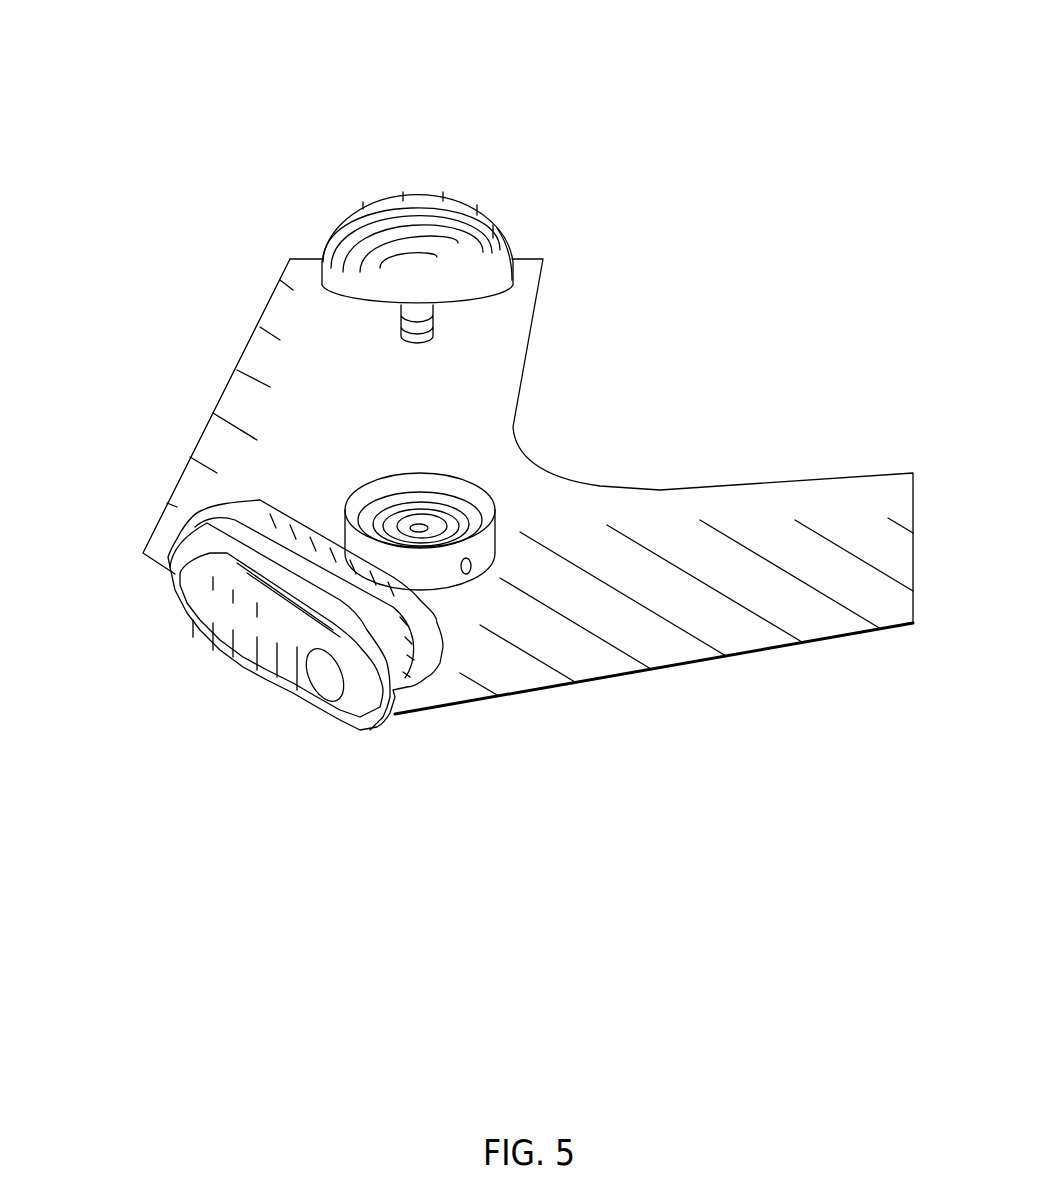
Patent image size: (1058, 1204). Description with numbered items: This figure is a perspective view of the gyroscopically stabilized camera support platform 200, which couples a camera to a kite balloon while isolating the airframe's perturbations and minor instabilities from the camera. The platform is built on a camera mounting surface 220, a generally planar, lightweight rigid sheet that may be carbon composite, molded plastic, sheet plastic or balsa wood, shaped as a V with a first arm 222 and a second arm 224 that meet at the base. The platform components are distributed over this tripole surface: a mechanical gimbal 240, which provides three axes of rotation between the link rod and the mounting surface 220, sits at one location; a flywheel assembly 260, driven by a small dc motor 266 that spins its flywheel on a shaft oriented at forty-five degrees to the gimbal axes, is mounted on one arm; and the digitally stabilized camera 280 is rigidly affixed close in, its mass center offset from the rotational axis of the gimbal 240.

The gyroscopically stabilized camera support platform 200 is at (738, 119).
The camera mounting surface 220 is at (770, 650).
The first arm 222 is at (574, 303).
The second arm 224 is at (836, 420).
The mechanical gimbal 240 is at (525, 575).
The flywheel assembly 260 is at (284, 234).
The motor 266 is at (403, 342).
The camera 280 is at (250, 671).